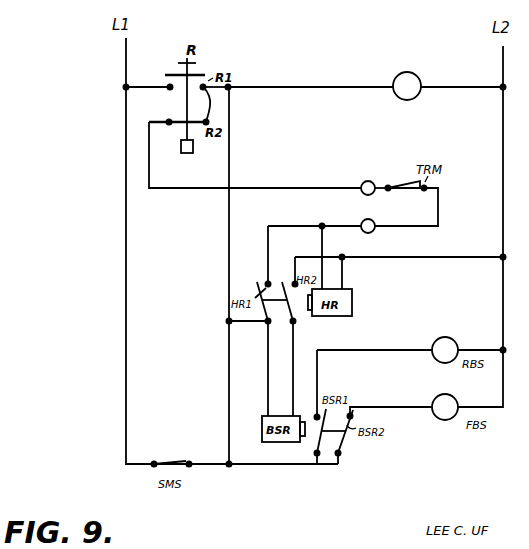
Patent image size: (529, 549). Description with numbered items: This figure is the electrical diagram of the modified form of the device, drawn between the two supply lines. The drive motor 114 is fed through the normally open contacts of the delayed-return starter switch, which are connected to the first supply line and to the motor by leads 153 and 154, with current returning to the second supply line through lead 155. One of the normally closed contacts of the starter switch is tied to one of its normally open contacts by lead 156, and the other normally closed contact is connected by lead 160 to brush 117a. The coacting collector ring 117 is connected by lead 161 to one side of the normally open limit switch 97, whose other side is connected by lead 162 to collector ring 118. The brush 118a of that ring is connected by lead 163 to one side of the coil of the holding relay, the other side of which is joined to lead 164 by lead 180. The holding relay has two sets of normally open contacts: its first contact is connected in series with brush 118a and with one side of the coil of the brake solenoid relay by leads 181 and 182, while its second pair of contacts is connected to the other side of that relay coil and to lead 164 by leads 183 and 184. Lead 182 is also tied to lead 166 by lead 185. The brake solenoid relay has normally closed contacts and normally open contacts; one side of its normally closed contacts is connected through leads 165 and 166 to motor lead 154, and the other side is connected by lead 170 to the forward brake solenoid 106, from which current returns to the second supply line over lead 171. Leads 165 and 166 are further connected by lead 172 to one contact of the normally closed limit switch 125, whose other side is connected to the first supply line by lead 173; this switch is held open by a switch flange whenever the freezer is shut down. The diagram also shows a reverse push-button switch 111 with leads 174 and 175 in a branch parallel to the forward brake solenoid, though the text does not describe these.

The lead 153 is at (165, 89).
The lead 156 is at (211, 105).
The lead 154 is at (350, 79).
The drive motor 114 is at (410, 72).
The lead 155 is at (482, 86).
The lead 160 is at (290, 189).
The collector ring 117 is at (362, 196).
The brush 117a is at (361, 186).
The lead 161 is at (388, 180).
The limit switch 97 is at (420, 196).
The lead 162 is at (438, 212).
The collector ring 118 is at (361, 232).
The brush 118a is at (361, 222).
The lead 163 is at (319, 243).
The lead 164 is at (453, 257).
The lead 181 is at (264, 247).
The lead 184 is at (283, 270).
The lead 180 is at (346, 278).
The lead 185 is at (254, 322).
The lead 183 is at (294, 354).
The lead 166 is at (229, 380).
The lead 182 is at (268, 380).
The conductor 174 is at (402, 345).
The reverse button switch 111 is at (450, 344).
The conductor 175 is at (496, 352).
The forward brake solenoid 106 is at (456, 395).
The lead 170 is at (403, 408).
The lead 171 is at (495, 410).
The SMS limit switch 125 is at (189, 452).
The lead 173 is at (143, 466).
The lead 172 is at (210, 466).
The lead 165 is at (292, 467).